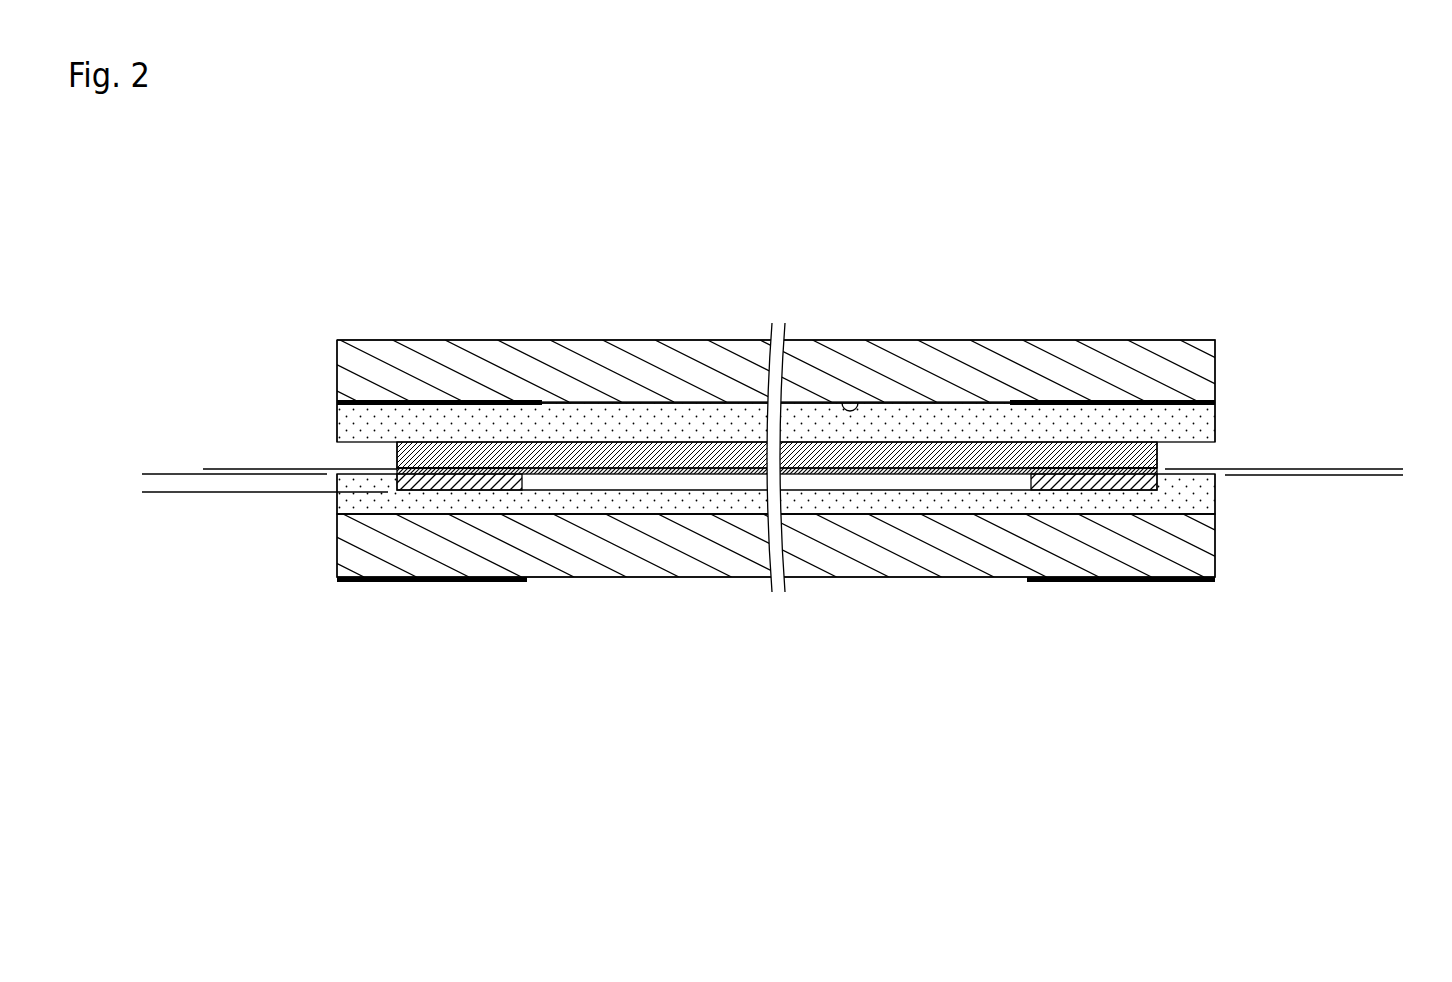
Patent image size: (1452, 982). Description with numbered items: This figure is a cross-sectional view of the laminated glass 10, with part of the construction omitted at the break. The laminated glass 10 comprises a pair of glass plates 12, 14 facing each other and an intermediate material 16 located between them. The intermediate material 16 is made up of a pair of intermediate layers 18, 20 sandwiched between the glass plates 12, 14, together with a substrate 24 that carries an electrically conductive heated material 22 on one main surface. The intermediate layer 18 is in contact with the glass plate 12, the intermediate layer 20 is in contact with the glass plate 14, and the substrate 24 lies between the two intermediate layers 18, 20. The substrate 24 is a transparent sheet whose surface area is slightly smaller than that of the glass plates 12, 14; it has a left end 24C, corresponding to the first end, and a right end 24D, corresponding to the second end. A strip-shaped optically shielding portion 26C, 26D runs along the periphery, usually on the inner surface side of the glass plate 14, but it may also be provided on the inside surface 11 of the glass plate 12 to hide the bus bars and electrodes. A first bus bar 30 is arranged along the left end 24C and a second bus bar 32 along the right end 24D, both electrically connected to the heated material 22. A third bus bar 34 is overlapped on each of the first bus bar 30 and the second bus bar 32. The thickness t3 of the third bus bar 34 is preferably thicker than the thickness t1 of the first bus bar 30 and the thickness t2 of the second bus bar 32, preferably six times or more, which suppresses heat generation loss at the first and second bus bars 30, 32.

The laminated glass 10 is at (1122, 287).
The inside surface 11 is at (842, 402).
The glass plate 12 is at (676, 340).
The glass plate 14 is at (1003, 580).
The intermediate material 16 is at (1323, 515).
The intermediate layer 18 is at (946, 418).
The intermediate layer 20 is at (806, 497).
The electrically conductive heated material 22 is at (641, 477).
The substrate 24 is at (899, 455).
The left end 24C is at (397, 455).
The right end 24D is at (1157, 456).
The optically shielding portion 26C is at (421, 402).
The optically shielding portion 26D is at (1163, 402).
The first bus bar 30 is at (460, 468).
The second bus bar 32 is at (1091, 467).
The third bus bar 34 is at (458, 491).
The thickness of the first bus bar t1 is at (211, 483).
The thickness of the second bus bar t2 is at (1399, 432).
The thickness of the third bus bar t3 is at (147, 433).